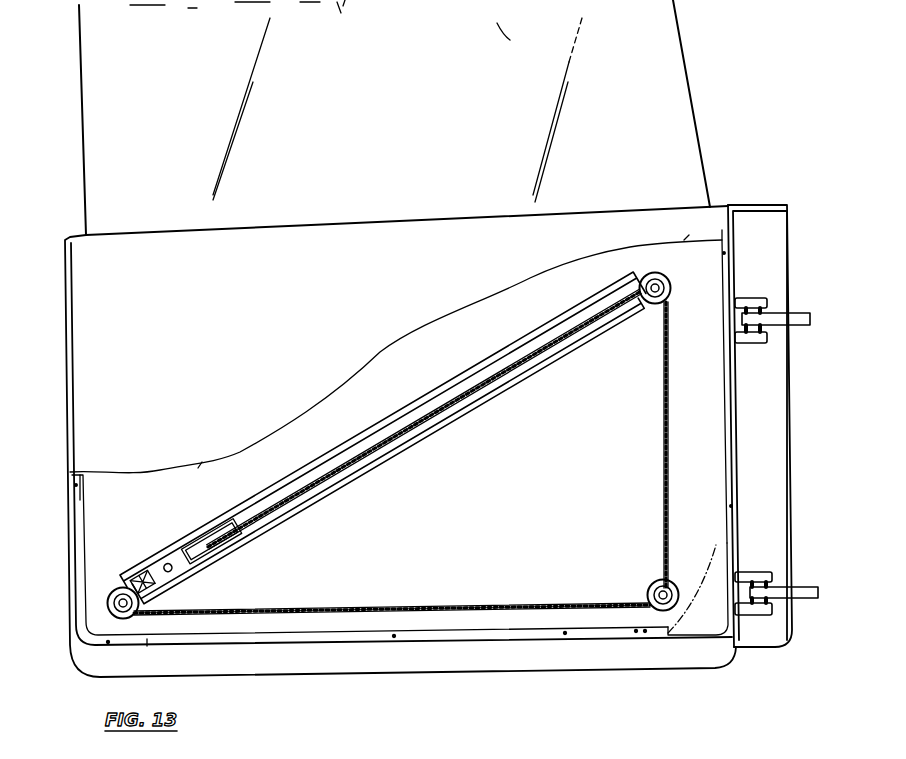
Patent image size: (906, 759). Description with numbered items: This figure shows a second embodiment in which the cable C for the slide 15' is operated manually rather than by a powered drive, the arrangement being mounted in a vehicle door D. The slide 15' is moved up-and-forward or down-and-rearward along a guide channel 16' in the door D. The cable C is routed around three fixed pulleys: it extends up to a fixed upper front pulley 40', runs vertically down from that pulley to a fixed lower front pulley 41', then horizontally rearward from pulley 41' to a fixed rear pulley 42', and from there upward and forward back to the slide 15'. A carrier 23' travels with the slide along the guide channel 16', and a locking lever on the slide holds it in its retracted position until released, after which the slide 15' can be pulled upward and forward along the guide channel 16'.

The door D is at (80, 323).
The cable C is at (387, 437).
The slide 15' is at (152, 553).
The guide channel 16' is at (383, 434).
The channel carrier 23' is at (388, 446).
The fixed upper front pulley 40' is at (676, 282).
The fixed lower front pulley 41' is at (647, 581).
The fixed rear pulley 42' is at (113, 590).